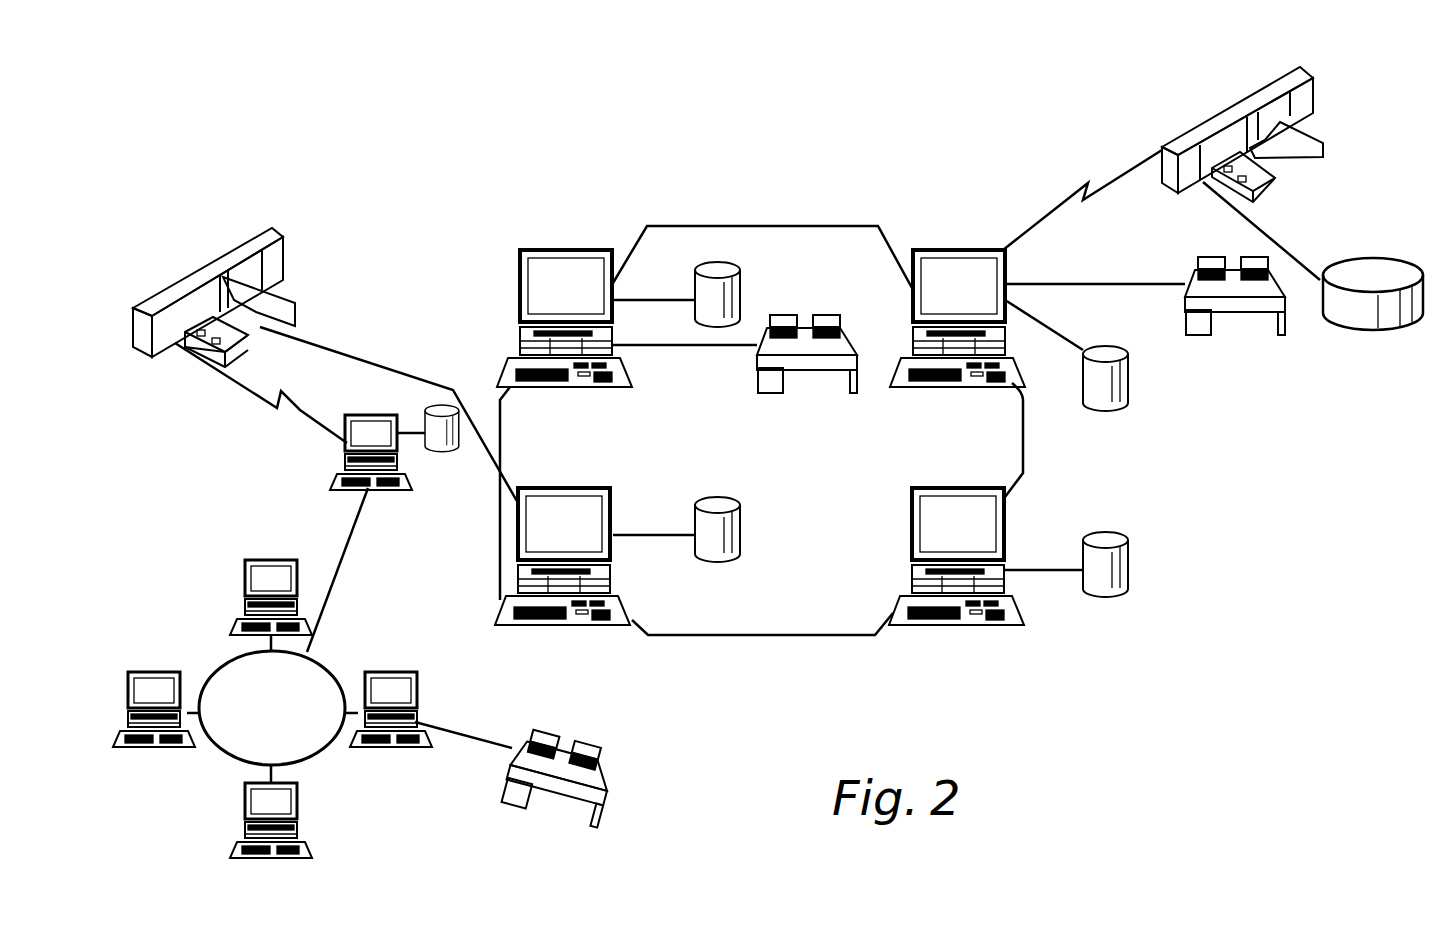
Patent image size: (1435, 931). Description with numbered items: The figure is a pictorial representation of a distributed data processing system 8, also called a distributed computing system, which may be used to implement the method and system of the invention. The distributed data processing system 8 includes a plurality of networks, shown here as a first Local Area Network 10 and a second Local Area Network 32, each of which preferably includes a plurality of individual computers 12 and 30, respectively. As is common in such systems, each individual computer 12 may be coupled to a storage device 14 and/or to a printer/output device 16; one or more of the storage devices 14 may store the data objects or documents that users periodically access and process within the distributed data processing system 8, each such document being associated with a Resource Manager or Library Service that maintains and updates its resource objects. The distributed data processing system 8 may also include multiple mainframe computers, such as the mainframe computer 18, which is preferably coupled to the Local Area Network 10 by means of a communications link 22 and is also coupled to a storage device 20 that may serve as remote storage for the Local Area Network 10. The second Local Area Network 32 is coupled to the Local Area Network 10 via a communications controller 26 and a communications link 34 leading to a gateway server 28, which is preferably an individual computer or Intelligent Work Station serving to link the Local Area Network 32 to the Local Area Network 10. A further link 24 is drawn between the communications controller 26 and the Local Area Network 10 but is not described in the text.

The distributed data processing system 8 is at (795, 182).
The Local Area Network 10 is at (790, 637).
The individual computers 12 is at (582, 250).
The storage device 14 is at (740, 273).
The printer/output device 16 is at (805, 315).
The mainframe computer 18 is at (1238, 105).
The storage device 20 is at (1392, 258).
The communications link 22 is at (1120, 168).
The communication link 24 is at (374, 360).
The communications controller 26 is at (283, 235).
The gateway server 28 is at (370, 415).
The individual computers 30 is at (284, 560).
The Local Area Network 32 is at (226, 756).
The communications link 34 is at (280, 420).